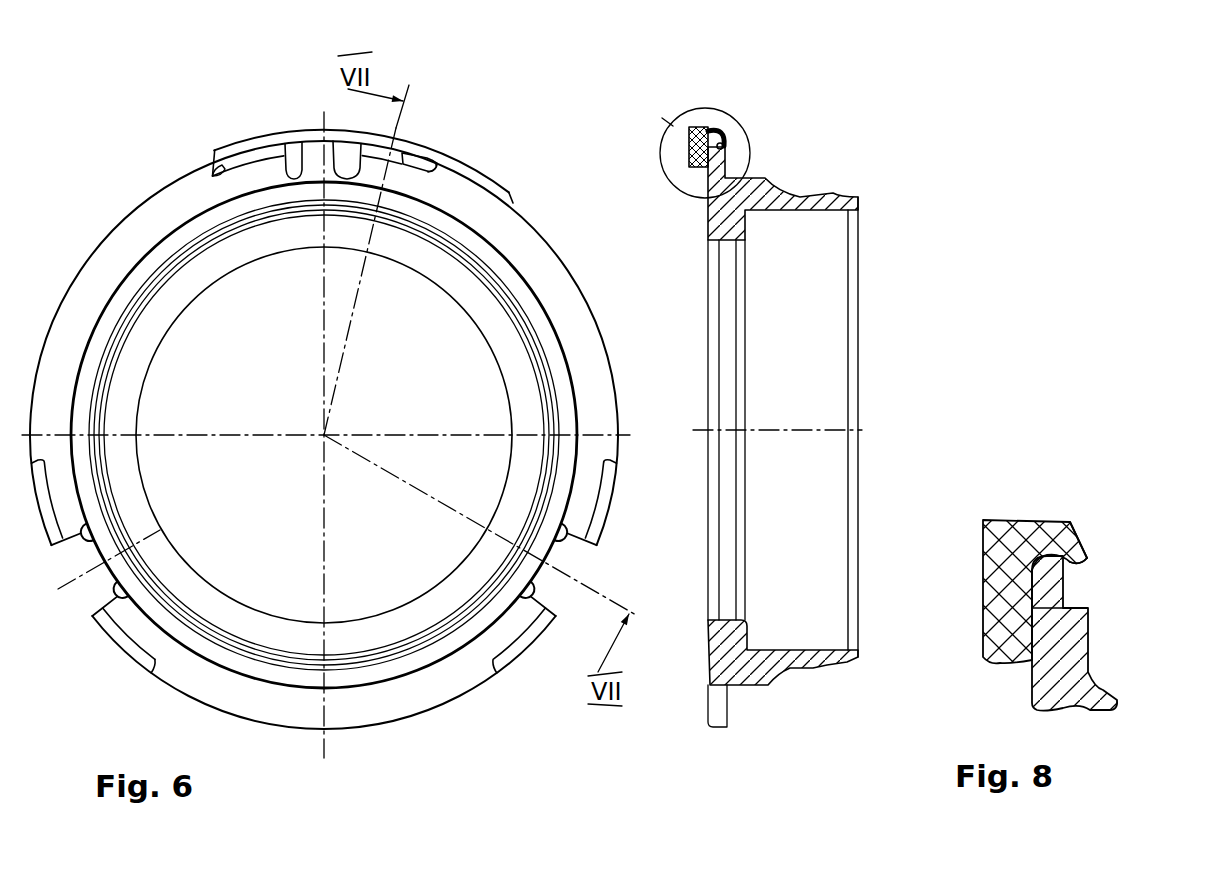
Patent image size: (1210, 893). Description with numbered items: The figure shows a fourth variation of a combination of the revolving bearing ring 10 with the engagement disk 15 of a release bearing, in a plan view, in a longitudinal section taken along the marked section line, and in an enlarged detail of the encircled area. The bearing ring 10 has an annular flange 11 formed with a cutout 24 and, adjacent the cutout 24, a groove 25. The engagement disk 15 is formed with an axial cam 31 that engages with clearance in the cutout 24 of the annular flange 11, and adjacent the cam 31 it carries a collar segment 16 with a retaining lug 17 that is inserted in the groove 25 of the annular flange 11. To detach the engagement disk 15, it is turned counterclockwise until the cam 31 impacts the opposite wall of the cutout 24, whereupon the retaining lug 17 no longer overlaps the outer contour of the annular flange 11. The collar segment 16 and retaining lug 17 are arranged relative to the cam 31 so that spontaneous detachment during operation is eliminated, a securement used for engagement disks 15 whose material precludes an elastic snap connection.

In FIG. 6, the revolving bearing ring 10 is at (160, 181).
In FIG. 7, the revolving bearing ring 10 is at (868, 240).
In FIG. 6, the annular flange 11 is at (110, 248).
In FIG. 7, the annular flange 11 is at (725, 157).
In FIG. 8, the annular flange 11 is at (1075, 653).
In FIG. 6, the engagement disk 15 is at (237, 140).
In FIG. 7, the engagement disk 15 is at (690, 153).
In FIG. 8, the engagement disk 15 is at (987, 587).
In FIG. 6, the collar segment 16 is at (480, 130).
In FIG. 7, the collar segment 16 is at (713, 128).
In FIG. 8, the collar segment 16 is at (1053, 533).
In FIG. 6, the retaining lug 17 is at (407, 147).
In FIG. 7, the retaining lug 17 is at (727, 142).
In FIG. 8, the retaining lug 17 is at (1075, 548).
In FIG. 6, the cutout 24 is at (297, 157).
In FIG. 6, the groove 25 is at (220, 167).
In FIG. 8, the groove 25 is at (1075, 588).
In FIG. 6, the axial cam 31 is at (348, 157).